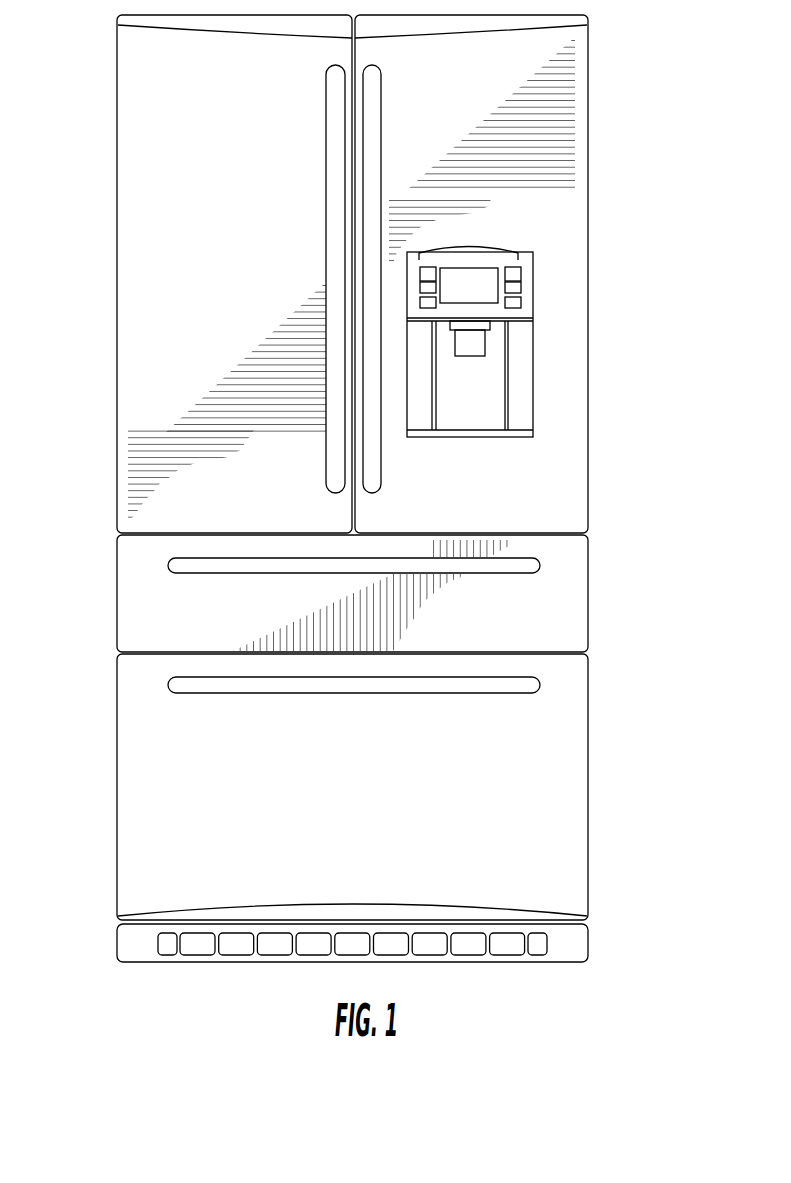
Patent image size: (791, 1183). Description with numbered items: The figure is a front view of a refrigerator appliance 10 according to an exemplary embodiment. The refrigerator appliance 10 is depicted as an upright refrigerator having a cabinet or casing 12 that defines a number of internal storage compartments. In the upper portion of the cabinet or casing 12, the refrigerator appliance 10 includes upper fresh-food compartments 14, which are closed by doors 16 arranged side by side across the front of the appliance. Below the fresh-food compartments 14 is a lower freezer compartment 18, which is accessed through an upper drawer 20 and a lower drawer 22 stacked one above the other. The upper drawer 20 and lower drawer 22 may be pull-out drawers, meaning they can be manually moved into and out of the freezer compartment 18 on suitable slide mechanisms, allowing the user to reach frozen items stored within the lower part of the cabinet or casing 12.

The refrigerator appliance 10 is at (628, 130).
The cabinet or casing 12 is at (588, 378).
The upper fresh-food compartments 14 is at (182, 227).
The doors 16 is at (181, 350).
The lower freezer compartment 18 is at (538, 598).
The upper drawer 20 is at (164, 623).
The lower drawer 22 is at (343, 804).